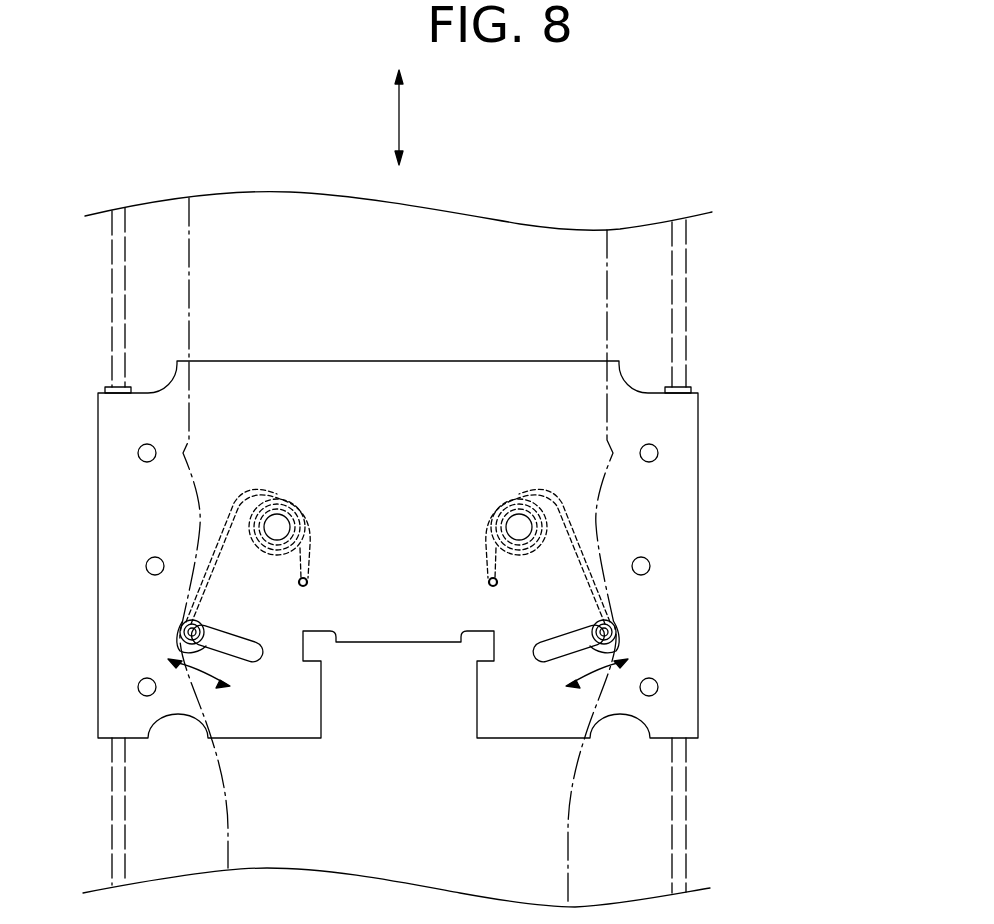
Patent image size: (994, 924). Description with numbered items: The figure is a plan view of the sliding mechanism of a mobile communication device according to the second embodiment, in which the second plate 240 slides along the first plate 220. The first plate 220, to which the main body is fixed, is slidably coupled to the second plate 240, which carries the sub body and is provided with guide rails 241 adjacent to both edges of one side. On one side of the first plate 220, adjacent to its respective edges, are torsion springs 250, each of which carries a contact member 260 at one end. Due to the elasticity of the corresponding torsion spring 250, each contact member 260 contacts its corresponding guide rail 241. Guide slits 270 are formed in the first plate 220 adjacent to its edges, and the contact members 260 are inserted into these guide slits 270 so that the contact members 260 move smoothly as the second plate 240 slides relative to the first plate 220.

The first plate 220 is at (680, 470).
The second plate 240 is at (640, 316).
The guide rail 241 is at (607, 262).
The torsion spring 250 is at (557, 502).
The contact member 260 is at (617, 651).
The guide slit 270 is at (604, 608).